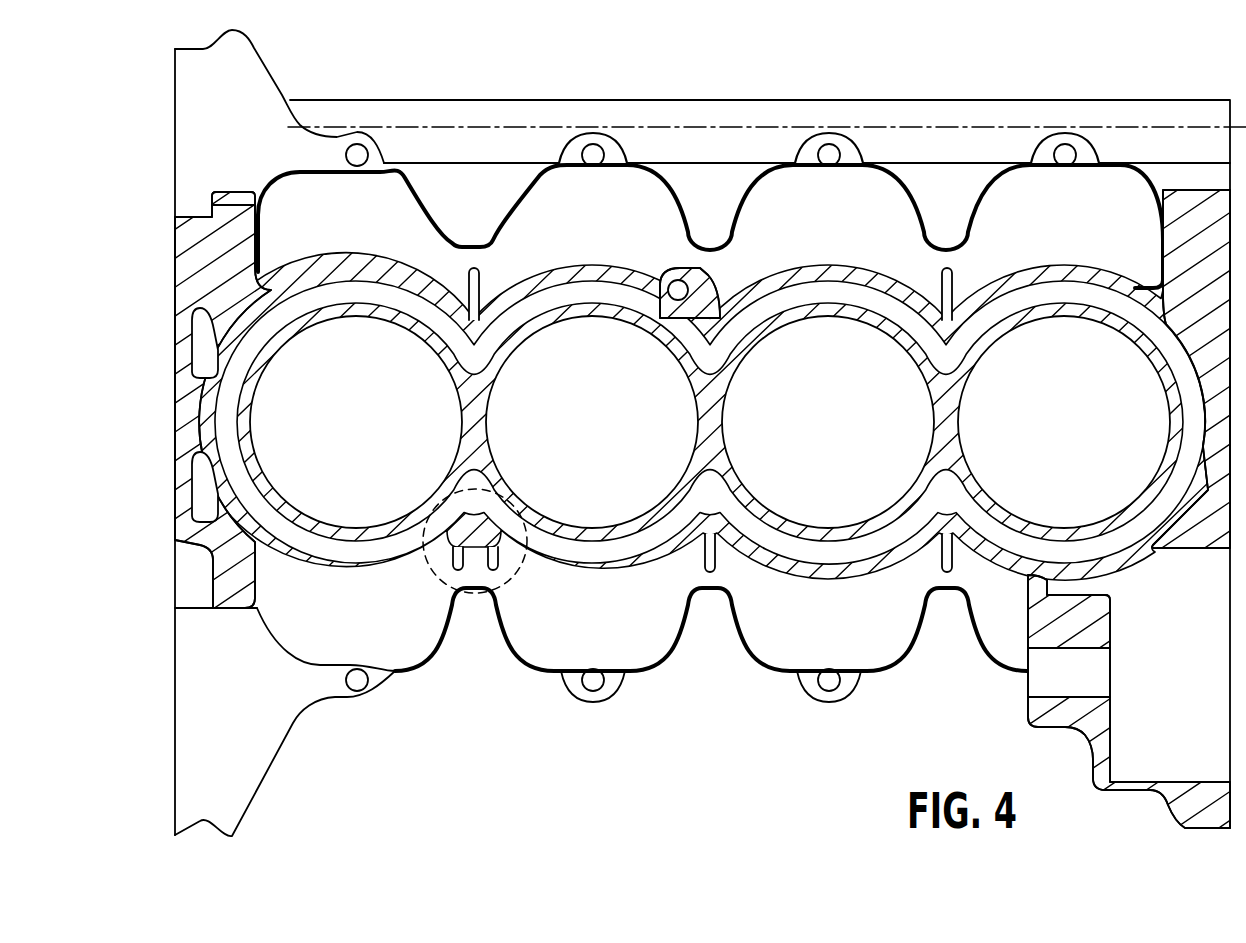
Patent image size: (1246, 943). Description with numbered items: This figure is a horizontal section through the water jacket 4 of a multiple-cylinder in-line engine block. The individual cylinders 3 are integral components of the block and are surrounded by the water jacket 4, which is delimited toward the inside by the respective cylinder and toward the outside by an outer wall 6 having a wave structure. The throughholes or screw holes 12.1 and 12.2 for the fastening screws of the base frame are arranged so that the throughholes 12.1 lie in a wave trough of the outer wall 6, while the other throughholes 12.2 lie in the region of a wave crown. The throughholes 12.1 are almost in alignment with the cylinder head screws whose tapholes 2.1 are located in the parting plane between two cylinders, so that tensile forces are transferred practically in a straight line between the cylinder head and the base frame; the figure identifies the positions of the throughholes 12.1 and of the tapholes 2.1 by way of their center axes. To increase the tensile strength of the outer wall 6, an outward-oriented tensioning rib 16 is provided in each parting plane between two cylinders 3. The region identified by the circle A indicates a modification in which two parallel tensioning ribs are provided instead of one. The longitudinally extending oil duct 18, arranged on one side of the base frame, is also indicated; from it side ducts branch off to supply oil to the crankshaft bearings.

The throughhole 12.2 is at (593, 148).
The longitudinally extending oil duct 18 is at (905, 125).
The throughhole 12.1 is at (471, 266).
The tensioning rib 16 is at (490, 262).
The taphole 2.1 is at (452, 296).
The outer wall 6 is at (636, 287).
The water jacket 4 is at (645, 278).
The cylinder 3 is at (412, 475).
The circle A is at (490, 600).